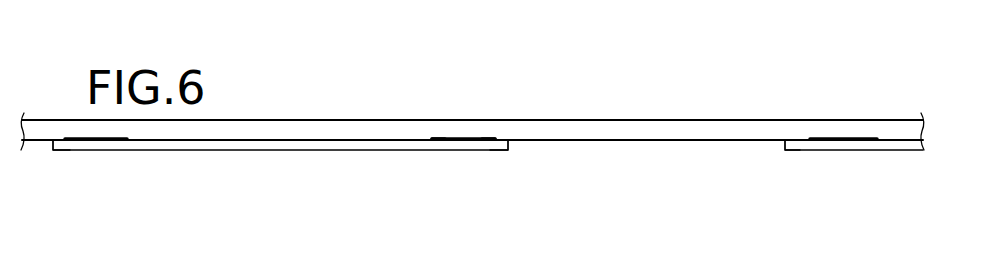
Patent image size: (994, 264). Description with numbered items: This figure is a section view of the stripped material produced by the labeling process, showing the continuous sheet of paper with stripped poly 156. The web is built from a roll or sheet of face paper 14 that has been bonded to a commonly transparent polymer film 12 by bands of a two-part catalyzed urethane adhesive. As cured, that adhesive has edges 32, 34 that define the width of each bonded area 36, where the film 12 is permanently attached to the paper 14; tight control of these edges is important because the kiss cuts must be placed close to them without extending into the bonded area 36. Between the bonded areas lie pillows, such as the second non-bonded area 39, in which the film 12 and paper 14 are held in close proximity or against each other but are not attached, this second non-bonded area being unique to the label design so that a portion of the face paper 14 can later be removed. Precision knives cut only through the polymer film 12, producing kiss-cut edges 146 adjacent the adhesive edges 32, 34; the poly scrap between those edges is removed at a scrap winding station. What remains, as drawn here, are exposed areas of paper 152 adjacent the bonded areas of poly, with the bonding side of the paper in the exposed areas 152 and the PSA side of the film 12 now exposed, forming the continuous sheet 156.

The polymer film 12 is at (215, 143).
The face paper 14 is at (243, 130).
The edge of cured adhesive 32 is at (432, 138).
The edge of cured adhesive 34 is at (496, 138).
The bonded area 36 is at (113, 139).
The second non-bonded area 39 is at (893, 124).
The kiss-cut edge 146 is at (54, 144).
The exposed area of paper 152 is at (643, 149).
The continuous sheet of paper with stripped poly 156 is at (610, 58).